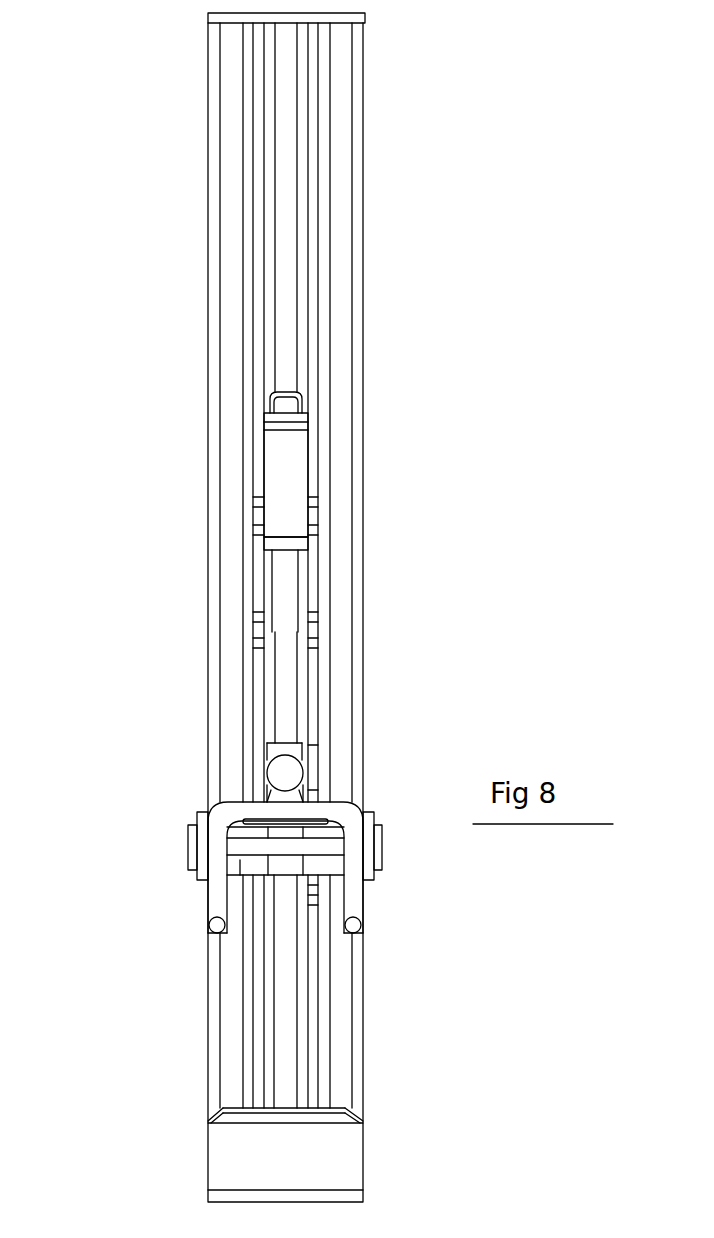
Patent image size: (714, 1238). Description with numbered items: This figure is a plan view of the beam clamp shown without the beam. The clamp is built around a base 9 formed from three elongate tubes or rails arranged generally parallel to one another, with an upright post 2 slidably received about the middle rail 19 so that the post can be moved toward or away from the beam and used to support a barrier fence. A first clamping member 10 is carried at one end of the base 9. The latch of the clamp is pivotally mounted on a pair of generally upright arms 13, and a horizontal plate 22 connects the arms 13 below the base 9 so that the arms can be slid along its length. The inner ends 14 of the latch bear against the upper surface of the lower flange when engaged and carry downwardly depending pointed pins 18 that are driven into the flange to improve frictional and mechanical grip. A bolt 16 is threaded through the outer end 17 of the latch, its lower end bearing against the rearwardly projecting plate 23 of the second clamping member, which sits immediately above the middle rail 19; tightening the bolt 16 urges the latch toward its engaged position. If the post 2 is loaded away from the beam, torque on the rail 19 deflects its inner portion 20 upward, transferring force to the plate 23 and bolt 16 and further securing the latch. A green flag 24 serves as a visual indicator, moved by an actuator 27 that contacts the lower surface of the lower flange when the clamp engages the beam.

The post 2 is at (288, 467).
The base 9 is at (362, 472).
The first clamping member 10 is at (338, 1150).
The arms 13 is at (372, 876).
The inner ends 14 is at (362, 945).
The bolt 16 is at (287, 780).
The outer end 17 is at (310, 813).
The pins 18 is at (217, 932).
The middle rail 19 is at (284, 1068).
The inner portion 20 is at (287, 730).
The horizontal plate 22 is at (240, 865).
The rearwardly projecting plate 23 is at (295, 747).
The flag 24 is at (315, 758).
The actuator 27 is at (318, 905).